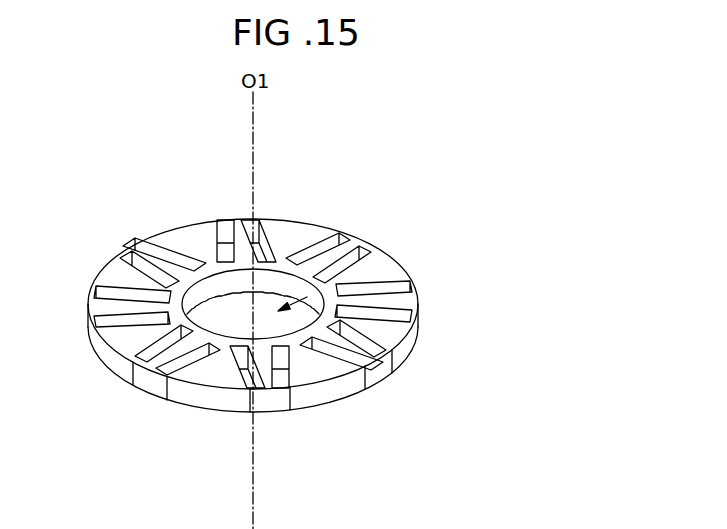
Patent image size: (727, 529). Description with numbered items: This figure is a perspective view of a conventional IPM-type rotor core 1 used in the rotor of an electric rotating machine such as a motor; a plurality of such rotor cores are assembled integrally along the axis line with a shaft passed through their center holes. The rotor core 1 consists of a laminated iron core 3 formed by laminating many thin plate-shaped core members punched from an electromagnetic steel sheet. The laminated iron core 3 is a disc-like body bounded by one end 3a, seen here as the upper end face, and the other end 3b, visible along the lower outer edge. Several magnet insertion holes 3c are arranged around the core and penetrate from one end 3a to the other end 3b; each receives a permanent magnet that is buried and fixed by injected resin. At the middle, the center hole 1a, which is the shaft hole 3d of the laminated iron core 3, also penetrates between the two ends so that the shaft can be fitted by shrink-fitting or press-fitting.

The rotor core 1 is at (387, 222).
The center hole 1a is at (325, 300).
The laminated iron core 3 is at (410, 272).
The one end 3a is at (384, 248).
The other end 3b is at (350, 392).
The magnet insertion hole 3c is at (361, 245).
The center hole 3d is at (253, 303).